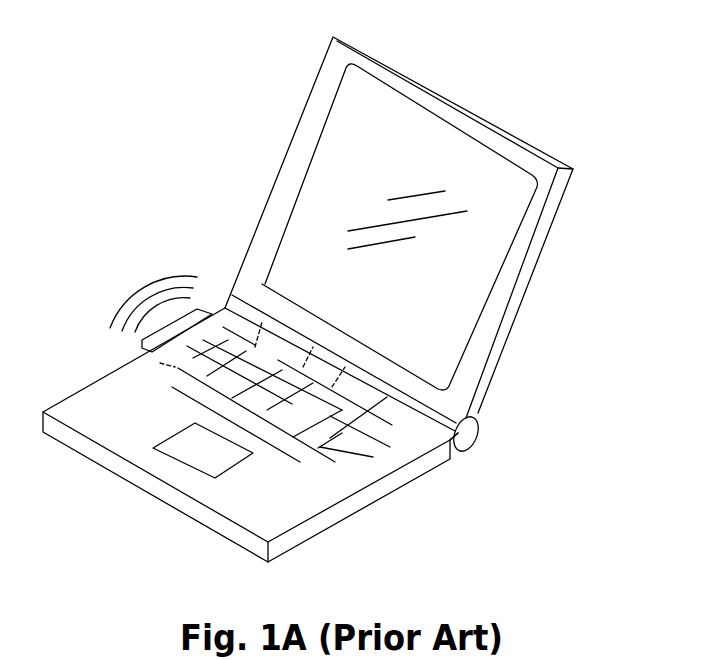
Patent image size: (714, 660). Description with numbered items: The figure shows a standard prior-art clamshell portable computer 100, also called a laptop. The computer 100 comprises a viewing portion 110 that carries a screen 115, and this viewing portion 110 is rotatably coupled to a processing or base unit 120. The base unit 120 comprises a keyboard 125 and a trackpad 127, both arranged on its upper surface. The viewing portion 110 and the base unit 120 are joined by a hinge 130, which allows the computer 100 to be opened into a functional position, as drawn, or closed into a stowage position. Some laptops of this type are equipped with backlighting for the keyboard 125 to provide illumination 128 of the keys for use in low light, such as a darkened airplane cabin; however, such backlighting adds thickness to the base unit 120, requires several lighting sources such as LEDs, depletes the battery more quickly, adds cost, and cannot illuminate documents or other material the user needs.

The clamshell portable computer 100 is at (182, 85).
The viewing portion 110 is at (580, 322).
The screen 115 is at (493, 245).
The base unit 120 is at (348, 535).
The keyboard 125 is at (373, 453).
The trackpad 127 is at (210, 462).
The illumination 128 is at (100, 323).
The hinge 130 is at (480, 444).